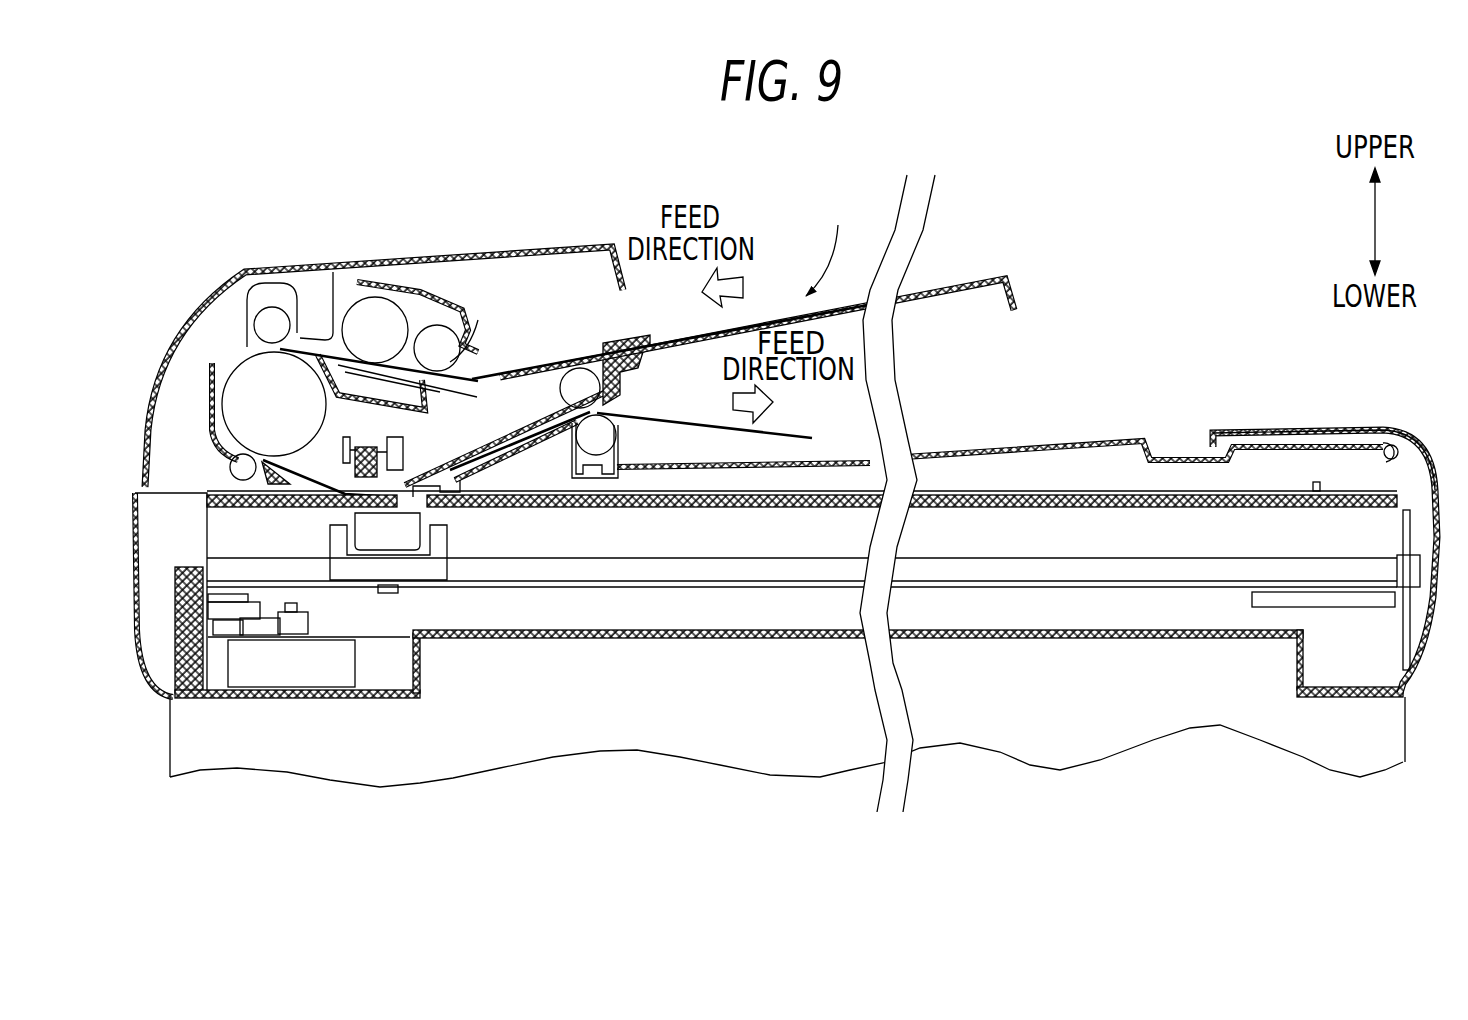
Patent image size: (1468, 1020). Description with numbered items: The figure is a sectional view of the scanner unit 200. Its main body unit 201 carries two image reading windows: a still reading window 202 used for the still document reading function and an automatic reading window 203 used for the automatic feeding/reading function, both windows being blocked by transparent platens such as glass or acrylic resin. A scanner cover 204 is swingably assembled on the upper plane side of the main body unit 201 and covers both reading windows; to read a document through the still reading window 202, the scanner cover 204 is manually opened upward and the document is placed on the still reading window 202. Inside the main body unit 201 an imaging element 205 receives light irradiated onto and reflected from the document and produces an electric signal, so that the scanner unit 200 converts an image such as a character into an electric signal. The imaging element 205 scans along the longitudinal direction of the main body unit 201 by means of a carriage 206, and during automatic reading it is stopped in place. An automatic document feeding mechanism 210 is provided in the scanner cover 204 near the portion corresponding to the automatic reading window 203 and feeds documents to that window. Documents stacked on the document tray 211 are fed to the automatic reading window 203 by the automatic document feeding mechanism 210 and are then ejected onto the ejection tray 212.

The scanner unit 200 is at (1138, 348).
The main body unit 201 is at (145, 653).
The still reading window 202 is at (750, 507).
The automatic reading window 203 is at (280, 508).
The scanner cover 204 is at (1270, 426).
The imaging element 205 is at (403, 533).
The carriage 206 is at (403, 568).
The automatic document feeding mechanism 210 is at (342, 285).
The document tray 211 is at (960, 270).
The ejection tray 212 is at (1040, 426).